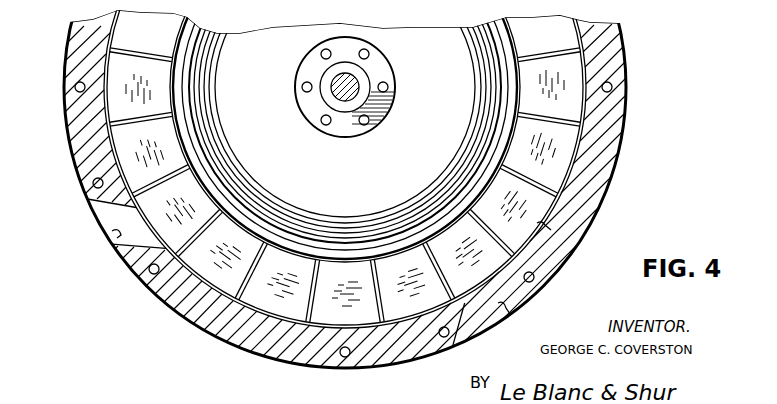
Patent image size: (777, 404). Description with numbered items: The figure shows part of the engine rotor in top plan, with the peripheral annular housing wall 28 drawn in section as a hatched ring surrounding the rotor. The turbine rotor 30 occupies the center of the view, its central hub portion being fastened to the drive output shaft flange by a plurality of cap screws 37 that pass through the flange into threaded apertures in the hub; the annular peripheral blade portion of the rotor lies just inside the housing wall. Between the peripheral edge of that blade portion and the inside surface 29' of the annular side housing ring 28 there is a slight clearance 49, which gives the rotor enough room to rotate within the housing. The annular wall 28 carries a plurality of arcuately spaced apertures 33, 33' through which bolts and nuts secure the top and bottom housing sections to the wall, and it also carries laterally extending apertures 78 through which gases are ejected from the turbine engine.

The peripheral annular turbine housing wall 28 is at (598, 162).
The inside surface 29' is at (578, 233).
The turbine rotor 30 is at (276, 114).
The apertures 33 is at (337, 290).
The bolt hole 33' is at (345, 239).
The cap screws 37 is at (321, 53).
The clearance 49 is at (569, 179).
The apertures 78 is at (112, 235).